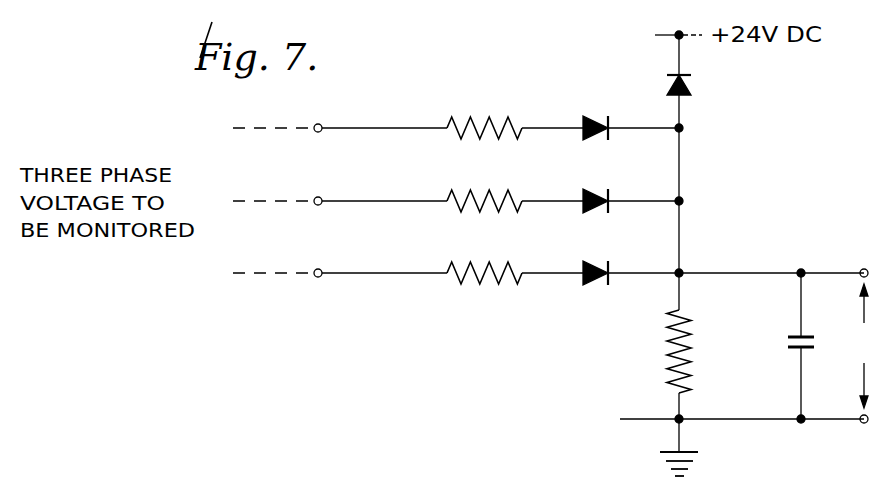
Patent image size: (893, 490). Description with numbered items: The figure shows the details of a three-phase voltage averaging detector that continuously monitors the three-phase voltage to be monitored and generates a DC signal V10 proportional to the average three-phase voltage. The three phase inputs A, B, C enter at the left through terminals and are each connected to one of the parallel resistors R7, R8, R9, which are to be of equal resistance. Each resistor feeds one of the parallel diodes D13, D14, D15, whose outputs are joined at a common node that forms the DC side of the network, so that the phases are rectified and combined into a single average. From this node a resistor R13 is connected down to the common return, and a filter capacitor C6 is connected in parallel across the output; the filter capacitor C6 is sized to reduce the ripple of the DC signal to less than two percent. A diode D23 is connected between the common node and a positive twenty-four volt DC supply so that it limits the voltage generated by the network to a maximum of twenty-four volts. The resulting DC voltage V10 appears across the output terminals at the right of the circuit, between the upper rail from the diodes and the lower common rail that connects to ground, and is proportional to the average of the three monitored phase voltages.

The phase A input terminal A is at (340, 115).
The phase B input terminal B is at (340, 188).
The phase C input terminal C is at (340, 260).
The resistor R7 is at (484, 117).
The resistor R8 is at (484, 190).
The resistor R9 is at (484, 262).
The diode D13 is at (608, 115).
The diode D14 is at (608, 188).
The diode D15 is at (608, 260).
The diode D23 is at (703, 87).
The resistor R13 is at (655, 351).
The filter capacitor C6 is at (783, 346).
The DC voltage V10 is at (871, 346).